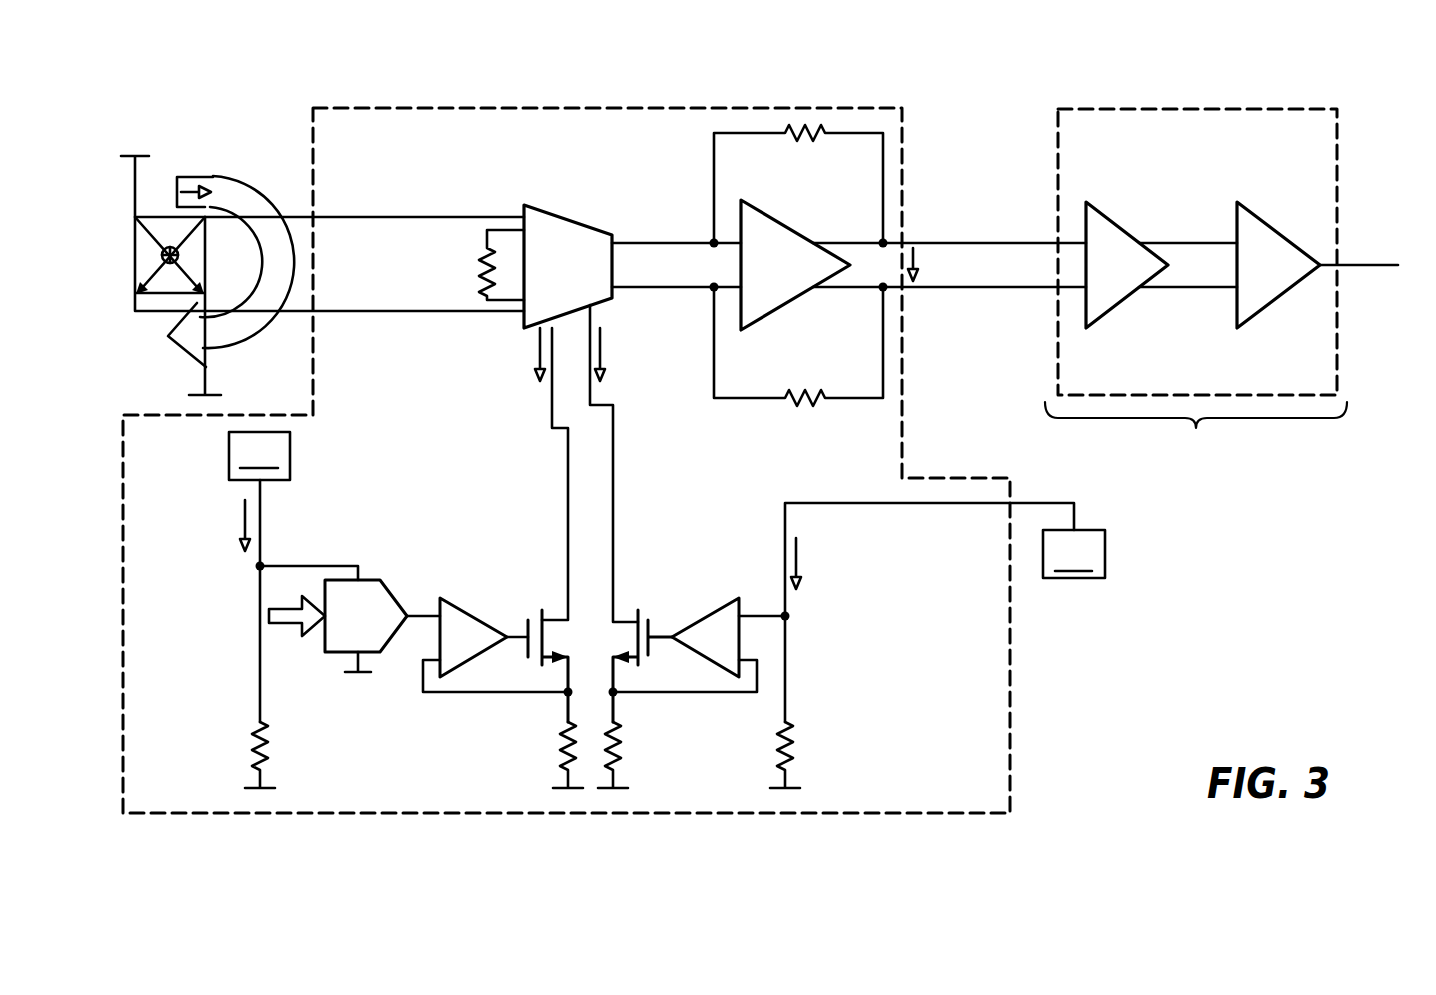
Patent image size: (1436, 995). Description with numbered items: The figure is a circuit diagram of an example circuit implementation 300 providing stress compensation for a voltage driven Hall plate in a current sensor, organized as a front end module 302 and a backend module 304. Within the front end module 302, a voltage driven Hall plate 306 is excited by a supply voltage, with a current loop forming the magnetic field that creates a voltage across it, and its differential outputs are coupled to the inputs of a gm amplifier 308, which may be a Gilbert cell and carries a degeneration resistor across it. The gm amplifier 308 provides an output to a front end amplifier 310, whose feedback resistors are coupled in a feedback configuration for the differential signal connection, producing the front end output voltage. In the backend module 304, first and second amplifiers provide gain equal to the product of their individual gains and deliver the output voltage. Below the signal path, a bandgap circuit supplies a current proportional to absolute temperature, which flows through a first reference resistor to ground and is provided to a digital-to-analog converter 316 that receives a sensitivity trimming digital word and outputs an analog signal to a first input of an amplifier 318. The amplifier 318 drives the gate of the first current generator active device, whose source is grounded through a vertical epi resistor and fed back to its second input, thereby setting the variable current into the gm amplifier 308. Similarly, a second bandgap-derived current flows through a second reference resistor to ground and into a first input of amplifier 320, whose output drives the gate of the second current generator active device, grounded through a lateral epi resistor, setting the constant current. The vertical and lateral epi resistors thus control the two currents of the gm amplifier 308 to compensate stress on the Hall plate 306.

The circuit implementation 300 is at (296, 38).
The front end module 302 is at (410, 176).
The backend module 304 is at (1187, 176).
The voltage driven Hall plate 306 is at (163, 297).
The gm amplifier 308 is at (572, 217).
The front end amplifier 310 is at (738, 218).
The digital-to-analog converter 316 is at (383, 581).
The amplifier 318 is at (463, 611).
The amplifier 320 is at (705, 615).